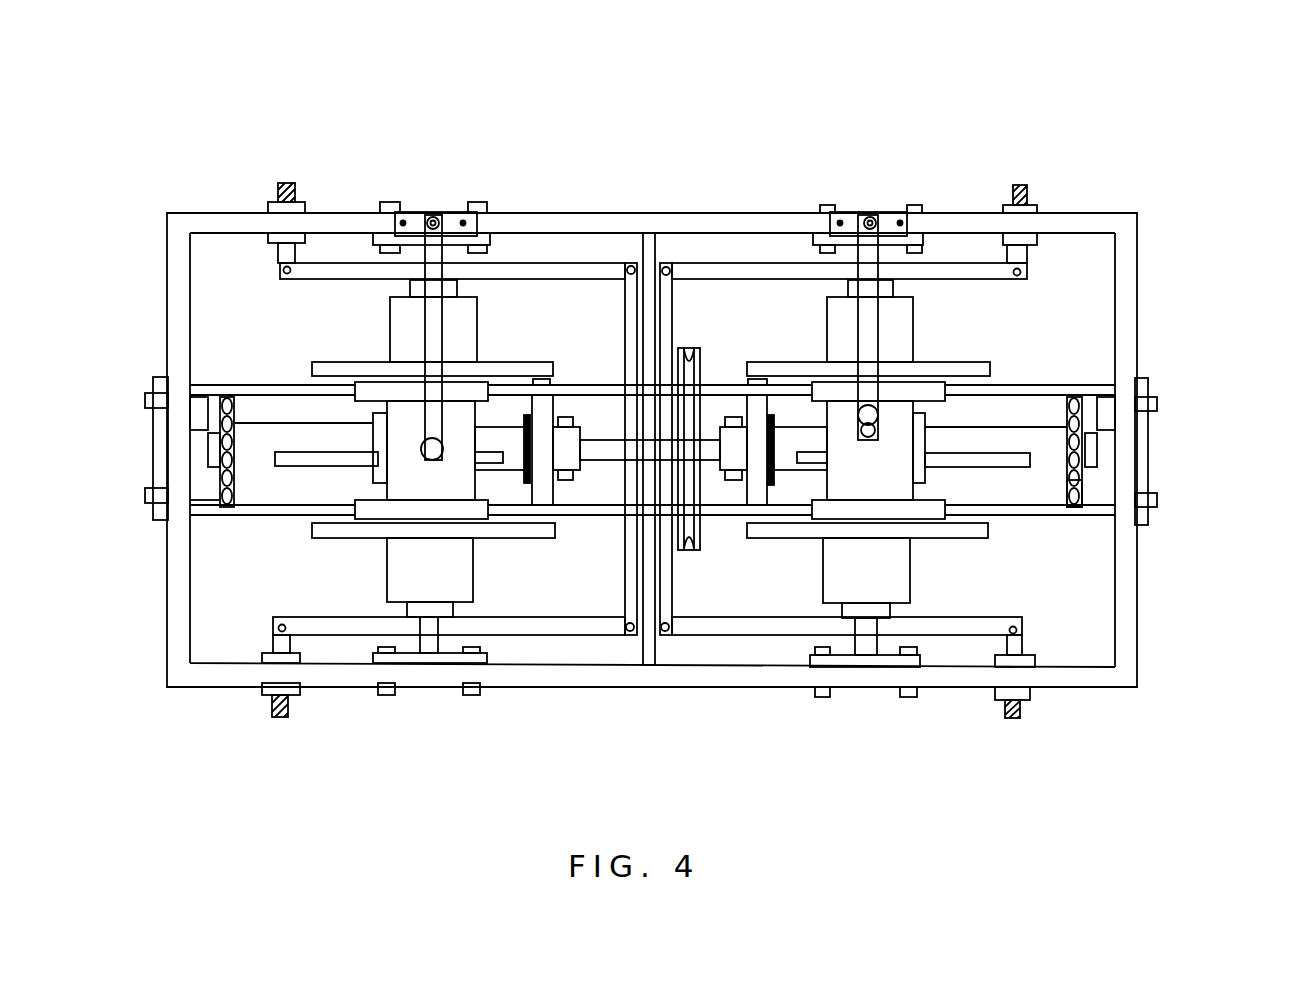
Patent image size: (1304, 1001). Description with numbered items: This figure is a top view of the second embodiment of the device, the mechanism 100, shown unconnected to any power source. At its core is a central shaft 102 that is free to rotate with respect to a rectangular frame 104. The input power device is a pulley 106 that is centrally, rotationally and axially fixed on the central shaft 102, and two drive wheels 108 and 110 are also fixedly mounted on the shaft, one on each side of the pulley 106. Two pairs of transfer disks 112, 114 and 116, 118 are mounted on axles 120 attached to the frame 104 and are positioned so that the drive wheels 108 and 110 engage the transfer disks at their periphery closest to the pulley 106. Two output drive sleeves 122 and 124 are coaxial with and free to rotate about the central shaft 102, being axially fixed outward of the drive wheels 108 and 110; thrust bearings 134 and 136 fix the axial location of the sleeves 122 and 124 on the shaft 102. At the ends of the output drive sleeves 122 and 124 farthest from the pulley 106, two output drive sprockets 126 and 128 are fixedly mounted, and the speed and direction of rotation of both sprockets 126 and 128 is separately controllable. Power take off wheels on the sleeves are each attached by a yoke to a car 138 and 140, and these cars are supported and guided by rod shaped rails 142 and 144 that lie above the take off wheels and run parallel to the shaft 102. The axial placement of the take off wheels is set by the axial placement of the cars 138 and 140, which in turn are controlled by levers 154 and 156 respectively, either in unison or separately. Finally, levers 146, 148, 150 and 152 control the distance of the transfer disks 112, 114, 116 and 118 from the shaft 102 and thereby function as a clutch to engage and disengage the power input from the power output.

The mechanism 100 is at (662, 138).
The central shaft 102 is at (212, 453).
The rectangular frame 104 is at (1125, 235).
The pulley 106 is at (695, 550).
The drive wheel 108 is at (755, 488).
The drive wheel 110 is at (540, 490).
The transfer disk 112 is at (345, 365).
The transfer disk 114 is at (337, 528).
The transfer disk 116 is at (963, 367).
The transfer disk 118 is at (946, 532).
The axle 120 is at (432, 637).
The output drive sleeve 122 is at (1027, 442).
The output drive sleeve 124 is at (270, 425).
The output drive sprocket 126 is at (218, 507).
The output drive sprocket 128 is at (1077, 490).
The thrust bearing 134 is at (772, 427).
The thrust bearing 136 is at (527, 415).
The car 138 is at (452, 388).
The car 140 is at (917, 390).
The rail 142 is at (288, 383).
The rail 144 is at (280, 510).
The lever 146 is at (587, 270).
The lever 148 is at (522, 627).
The lever 150 is at (751, 275).
The lever 152 is at (787, 637).
The lever 154 is at (432, 265).
The lever 156 is at (867, 283).